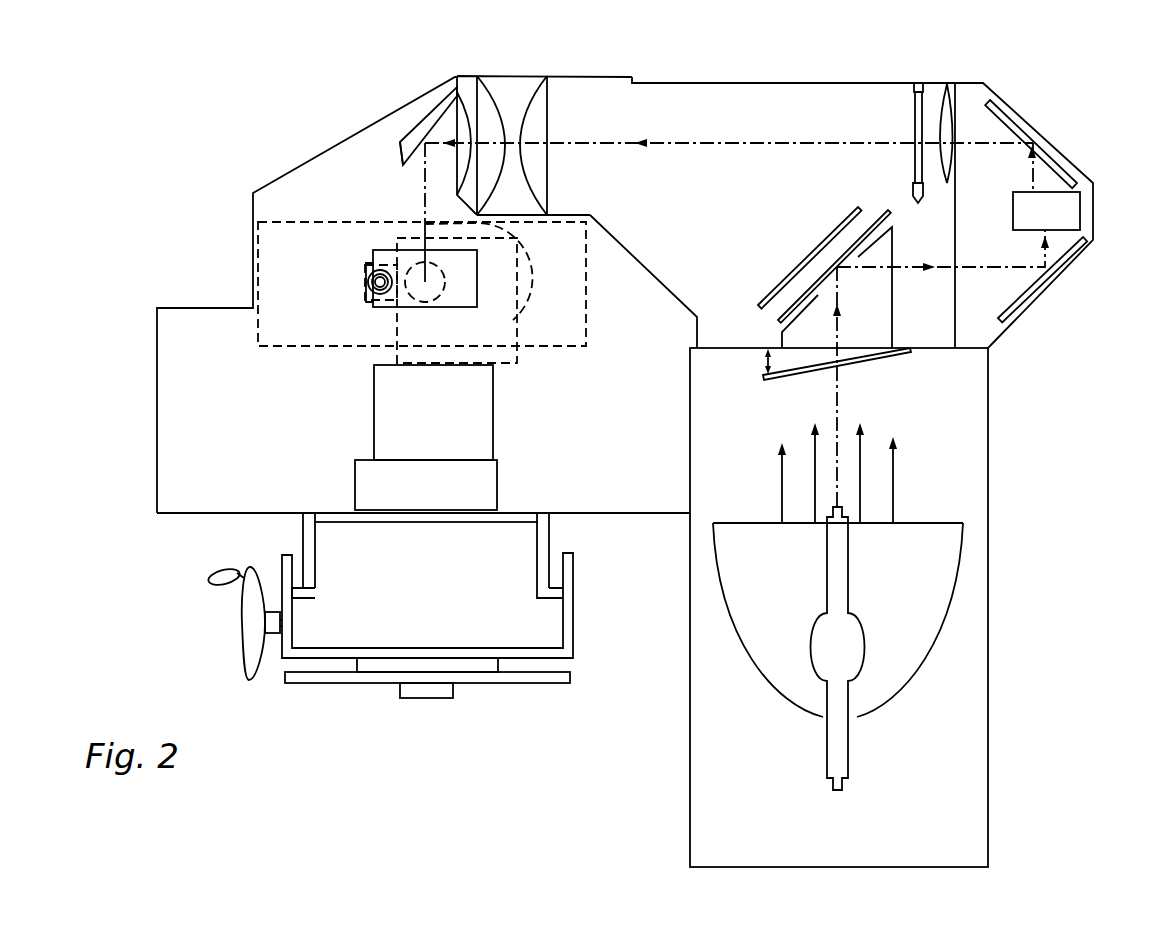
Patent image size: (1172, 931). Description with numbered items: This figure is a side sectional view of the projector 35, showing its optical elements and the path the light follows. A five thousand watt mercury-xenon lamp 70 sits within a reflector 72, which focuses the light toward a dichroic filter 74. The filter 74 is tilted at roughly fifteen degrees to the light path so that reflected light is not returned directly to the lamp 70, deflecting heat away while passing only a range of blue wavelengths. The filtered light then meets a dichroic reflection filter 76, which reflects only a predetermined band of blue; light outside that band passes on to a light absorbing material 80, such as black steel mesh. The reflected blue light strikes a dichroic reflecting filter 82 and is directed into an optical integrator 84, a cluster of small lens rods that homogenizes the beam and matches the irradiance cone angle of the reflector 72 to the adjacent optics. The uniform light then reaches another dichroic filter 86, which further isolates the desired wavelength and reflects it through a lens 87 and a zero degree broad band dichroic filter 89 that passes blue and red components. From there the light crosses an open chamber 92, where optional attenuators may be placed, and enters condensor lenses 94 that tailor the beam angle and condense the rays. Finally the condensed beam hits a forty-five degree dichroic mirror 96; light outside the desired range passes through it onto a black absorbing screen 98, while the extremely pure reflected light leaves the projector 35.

The projector 35 is at (255, 166).
The mercury-xenon lamp 70 is at (843, 760).
The reflector 72 is at (943, 622).
The dichroic filter 74 is at (883, 357).
The dichroic reflection filter 76 is at (875, 220).
The light absorbing material 80 is at (830, 235).
The dichroic reflecting filter 82 is at (1033, 290).
The optical integrator 84 is at (1070, 212).
The dichroic filter 86 is at (1033, 138).
The lens 87 is at (947, 82).
The 0° broad band dichroic filter 89 is at (916, 101).
The open chamber 92 is at (786, 106).
The condensor lenses 94 is at (532, 91).
The 45° dichroic mirror 96 is at (400, 158).
The black absorbing screen 98 is at (423, 120).